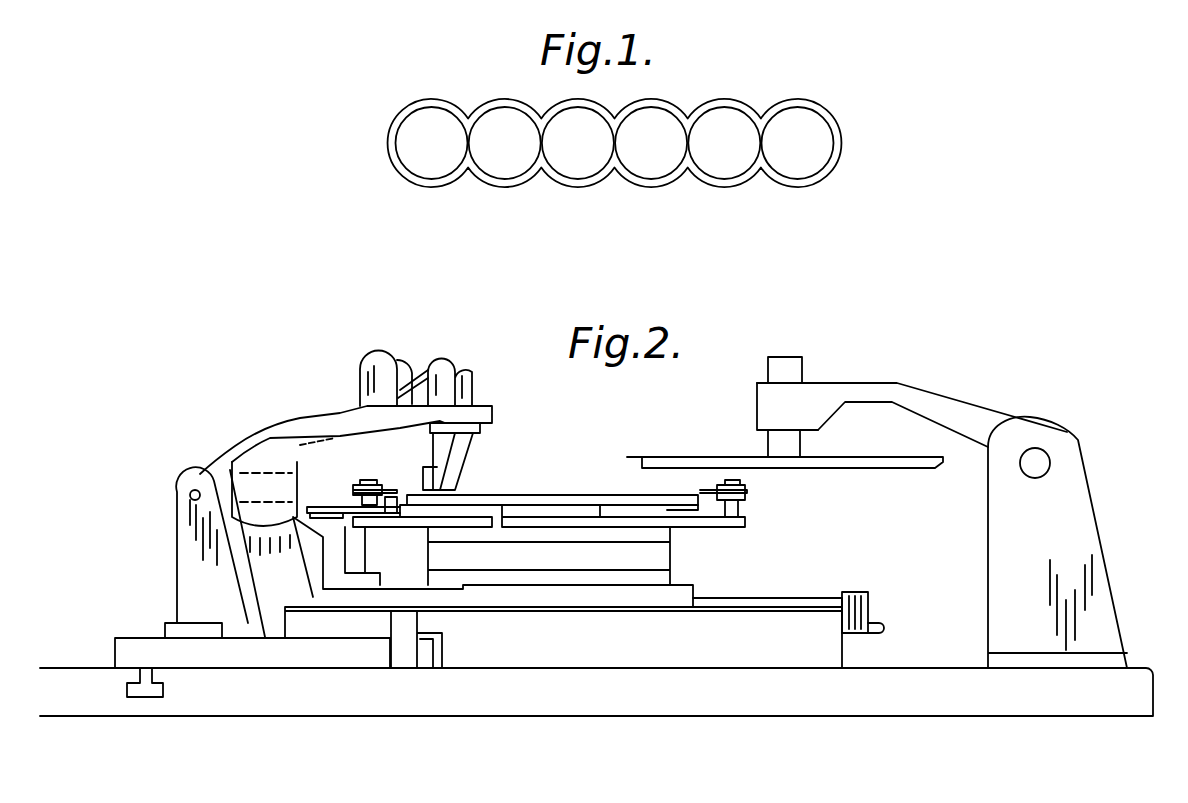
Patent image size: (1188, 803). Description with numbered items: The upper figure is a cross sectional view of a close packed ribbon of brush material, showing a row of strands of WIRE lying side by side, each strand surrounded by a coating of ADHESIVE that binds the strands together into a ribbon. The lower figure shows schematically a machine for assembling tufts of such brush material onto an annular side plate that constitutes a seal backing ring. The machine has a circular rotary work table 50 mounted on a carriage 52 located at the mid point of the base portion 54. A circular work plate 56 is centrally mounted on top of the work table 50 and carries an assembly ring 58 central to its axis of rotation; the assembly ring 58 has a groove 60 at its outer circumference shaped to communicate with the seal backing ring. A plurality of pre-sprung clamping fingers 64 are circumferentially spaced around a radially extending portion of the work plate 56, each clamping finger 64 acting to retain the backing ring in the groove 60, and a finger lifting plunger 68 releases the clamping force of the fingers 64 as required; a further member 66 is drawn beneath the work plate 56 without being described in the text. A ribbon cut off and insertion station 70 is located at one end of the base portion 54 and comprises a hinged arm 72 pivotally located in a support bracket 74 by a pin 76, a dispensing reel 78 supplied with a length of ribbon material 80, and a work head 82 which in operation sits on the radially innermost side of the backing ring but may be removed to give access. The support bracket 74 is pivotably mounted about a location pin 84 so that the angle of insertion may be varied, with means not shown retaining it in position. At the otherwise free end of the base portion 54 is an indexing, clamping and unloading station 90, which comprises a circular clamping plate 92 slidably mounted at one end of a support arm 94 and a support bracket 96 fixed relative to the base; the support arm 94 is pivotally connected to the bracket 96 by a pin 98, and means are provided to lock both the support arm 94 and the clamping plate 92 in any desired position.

In FIG. 1, the wire WIRE is at (815, 143).
In FIG. 1, the adhesive ADHESIVE is at (822, 176).
In FIG. 2, the rotary work table 50 is at (662, 555).
In FIG. 2, the carriage 52 is at (622, 598).
In FIG. 2, the base portion 54 is at (847, 700).
In FIG. 2, the work plate 56 is at (527, 533).
In FIG. 2, the assembly ring 58 is at (569, 496).
In FIG. 2, the groove 60 is at (693, 496).
In FIG. 2, the clamping fingers 64 is at (707, 490).
In FIG. 2, the lower slab 66 is at (717, 528).
In FIG. 2, the finger lifting plunger 68 is at (412, 474).
In FIG. 2, the ribbon cut off and insertion station 70 is at (322, 468).
In FIG. 2, the hinged arm 72 is at (228, 452).
In FIG. 2, the support bracket 74 is at (190, 571).
In FIG. 2, the pin 76 is at (190, 498).
In FIG. 2, the dispensing reel 78 is at (404, 355).
In FIG. 2, the ribbon material 80 is at (422, 370).
In FIG. 2, the work head 82 is at (452, 458).
In FIG. 2, the location pin 84 is at (406, 658).
In FIG. 2, the indexing/clamping/unloading station 90 is at (893, 490).
In FIG. 2, the clamping plate 92 is at (903, 470).
In FIG. 2, the support arm 94 is at (822, 405).
In FIG. 2, the support bracket 96 is at (1098, 497).
In FIG. 2, the pin 98 is at (1042, 456).